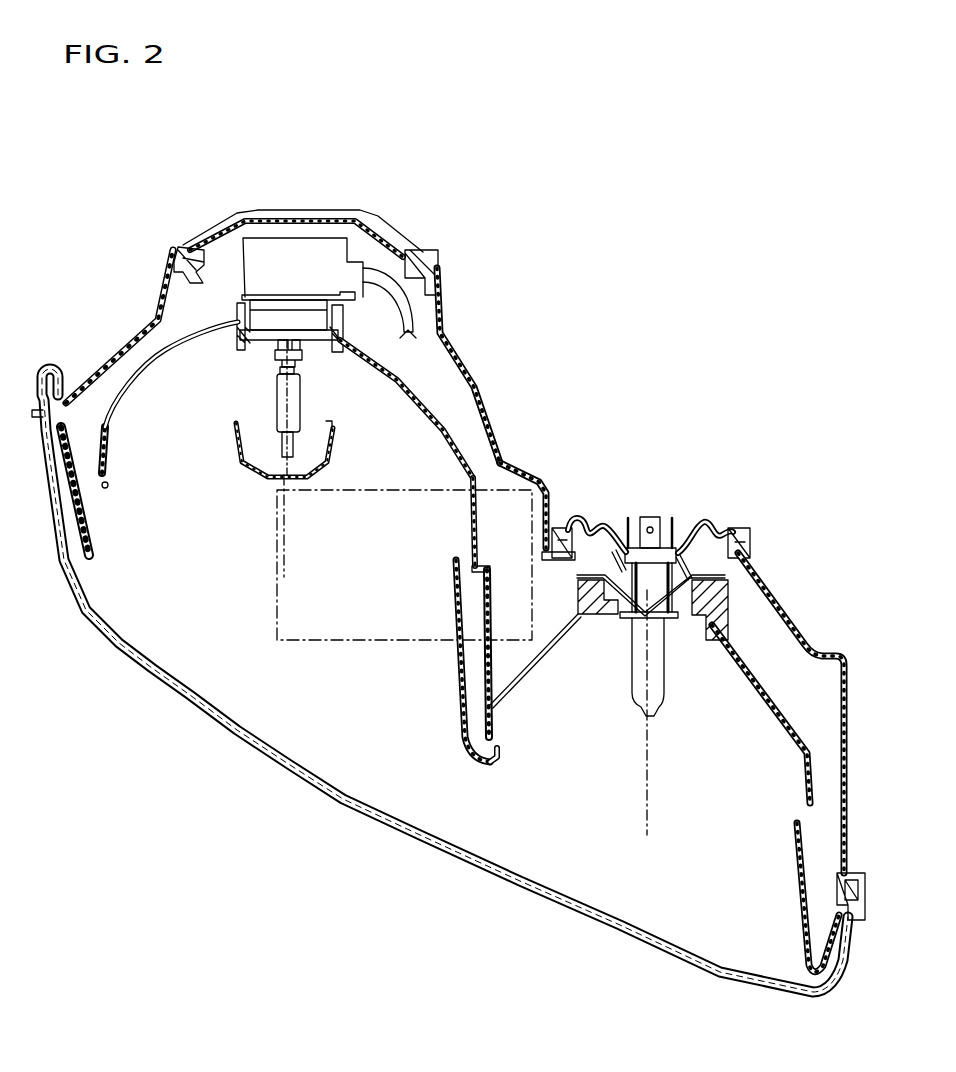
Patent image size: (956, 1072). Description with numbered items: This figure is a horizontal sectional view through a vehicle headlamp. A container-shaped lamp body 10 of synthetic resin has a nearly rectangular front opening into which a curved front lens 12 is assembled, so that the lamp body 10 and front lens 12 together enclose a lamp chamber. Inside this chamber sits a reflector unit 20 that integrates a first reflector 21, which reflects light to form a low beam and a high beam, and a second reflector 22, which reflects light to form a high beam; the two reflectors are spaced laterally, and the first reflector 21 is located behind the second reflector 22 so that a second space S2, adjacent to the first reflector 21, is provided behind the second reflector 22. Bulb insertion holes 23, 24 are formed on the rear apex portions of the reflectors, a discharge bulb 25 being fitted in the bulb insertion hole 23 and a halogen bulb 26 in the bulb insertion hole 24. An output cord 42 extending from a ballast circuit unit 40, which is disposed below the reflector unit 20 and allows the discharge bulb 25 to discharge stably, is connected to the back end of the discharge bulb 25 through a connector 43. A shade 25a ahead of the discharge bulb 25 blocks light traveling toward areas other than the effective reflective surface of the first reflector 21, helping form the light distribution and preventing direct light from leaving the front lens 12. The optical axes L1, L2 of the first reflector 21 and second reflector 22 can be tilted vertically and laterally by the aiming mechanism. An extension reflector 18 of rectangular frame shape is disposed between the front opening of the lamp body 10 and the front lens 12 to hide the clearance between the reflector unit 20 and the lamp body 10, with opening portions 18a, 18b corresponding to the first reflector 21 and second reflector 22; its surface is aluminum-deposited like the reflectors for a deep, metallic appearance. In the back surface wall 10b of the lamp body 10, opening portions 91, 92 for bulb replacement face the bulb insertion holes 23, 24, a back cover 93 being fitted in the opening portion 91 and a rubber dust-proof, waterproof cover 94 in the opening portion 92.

The lamp body 10 is at (484, 388).
The back surface wall 10b is at (520, 472).
The front lens 12 is at (342, 800).
The extension reflector 18 is at (447, 686).
The opening portion 18a is at (453, 572).
The opening portion 18b is at (499, 757).
The reflector unit 20 is at (455, 527).
The first reflector 21 is at (400, 370).
The second reflector 22 is at (770, 653).
The bulb insertion hole 23 is at (240, 314).
The bulb insertion hole 24 is at (630, 580).
The discharge bulb 25 is at (277, 403).
The shade 25a is at (250, 473).
The halogen bulb 26 is at (629, 684).
The ballast circuit unit 40 is at (385, 488).
The output cord 42 is at (385, 282).
The connector 43 is at (300, 255).
The opening portion 91 is at (200, 262).
The opening portion 92 is at (692, 537).
The back cover 93 is at (352, 210).
The rubber dust-proof, waterproof cover 94 is at (730, 528).
The optical axis L1 is at (277, 555).
The optical axis L2 is at (648, 808).
The second space S2 is at (570, 609).